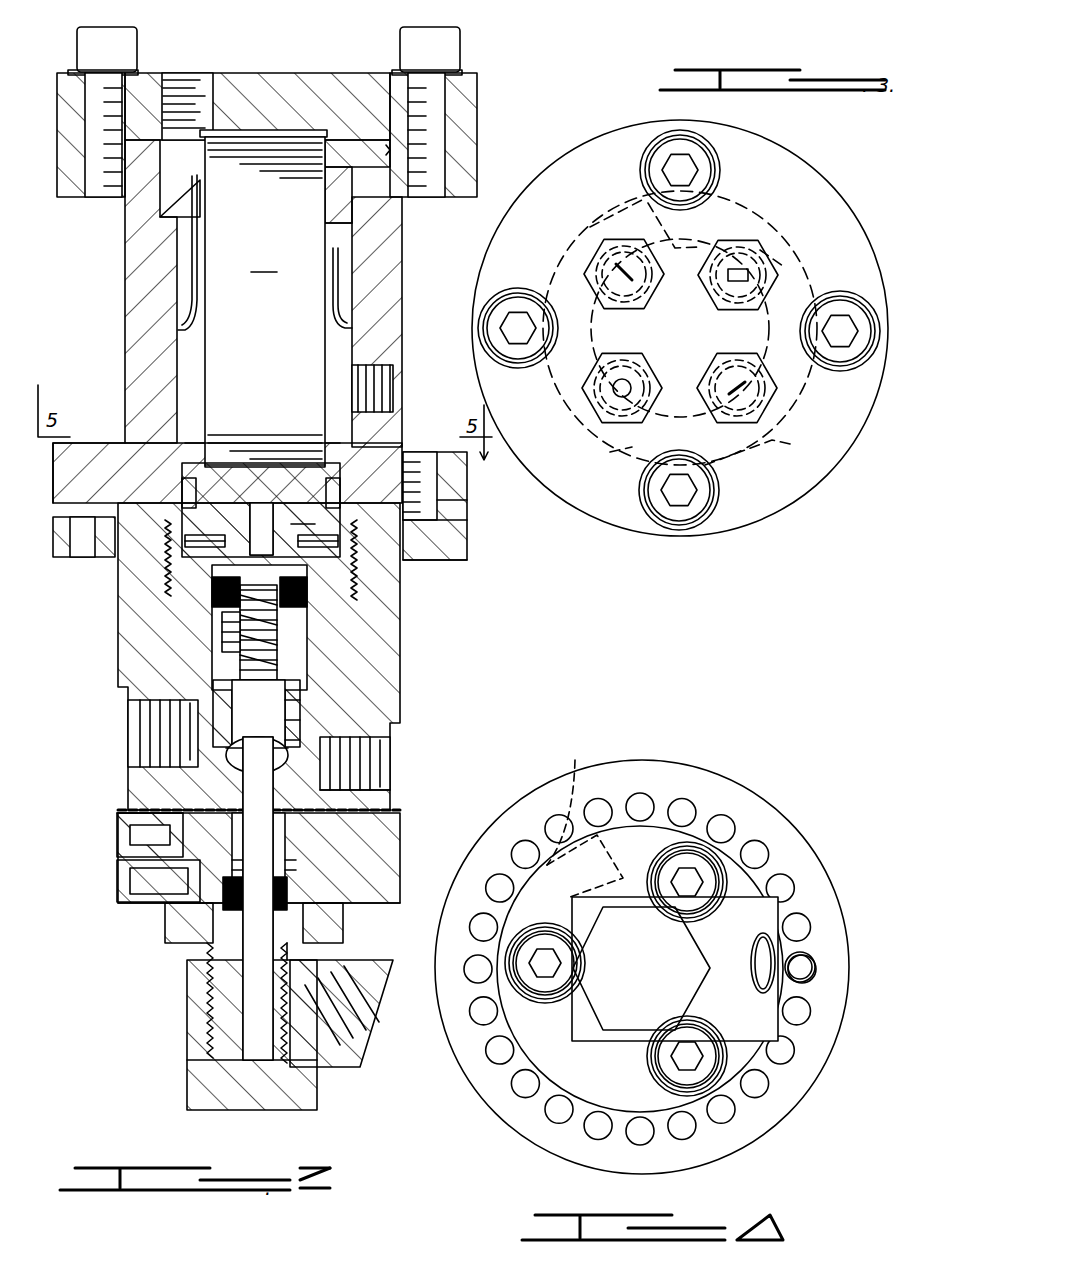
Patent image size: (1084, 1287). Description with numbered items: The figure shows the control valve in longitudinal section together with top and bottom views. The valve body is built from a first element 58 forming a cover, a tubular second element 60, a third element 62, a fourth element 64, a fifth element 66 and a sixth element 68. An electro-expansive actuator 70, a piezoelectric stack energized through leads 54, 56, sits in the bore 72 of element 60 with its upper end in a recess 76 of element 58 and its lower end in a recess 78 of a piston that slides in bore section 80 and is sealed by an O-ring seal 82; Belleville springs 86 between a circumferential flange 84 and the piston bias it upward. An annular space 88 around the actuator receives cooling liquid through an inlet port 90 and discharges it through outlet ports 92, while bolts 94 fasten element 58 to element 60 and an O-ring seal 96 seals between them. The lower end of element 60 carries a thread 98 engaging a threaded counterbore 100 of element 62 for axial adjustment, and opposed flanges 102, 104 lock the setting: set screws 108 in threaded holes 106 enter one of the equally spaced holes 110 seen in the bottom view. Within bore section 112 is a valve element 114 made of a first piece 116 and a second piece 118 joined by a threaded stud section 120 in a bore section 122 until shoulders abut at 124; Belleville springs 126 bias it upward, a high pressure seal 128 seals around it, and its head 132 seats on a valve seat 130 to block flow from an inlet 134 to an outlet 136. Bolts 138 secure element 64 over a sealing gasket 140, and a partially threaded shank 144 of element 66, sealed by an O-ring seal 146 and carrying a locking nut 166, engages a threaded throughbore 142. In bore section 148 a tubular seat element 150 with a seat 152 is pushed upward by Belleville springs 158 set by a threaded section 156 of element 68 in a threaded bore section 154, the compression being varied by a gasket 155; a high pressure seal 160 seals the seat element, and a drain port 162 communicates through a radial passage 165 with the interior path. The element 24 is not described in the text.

In FIG. 2, the plug 24 is at (261, 500).
In FIG. 2, the lead 54 is at (170, 210).
In FIG. 3, the lead 54 is at (632, 292).
In FIG. 2, the lead 56 is at (352, 265).
In FIG. 3, the lead 56 is at (725, 388).
In FIG. 2, the first element 58 is at (480, 115).
In FIG. 2, the second element 60 is at (400, 300).
In FIG. 2, the third element 62 is at (400, 660).
In FIG. 2, the fourth element 64 is at (400, 830).
In FIG. 2, the fifth element 66 is at (360, 970).
In FIG. 4, the fifth element 66 is at (785, 905).
In FIG. 2, the sixth element 68 is at (317, 1098).
In FIG. 4, the sixth element 68 is at (705, 945).
In FIG. 2, the electro-expansive actuator 70 is at (263, 255).
In FIG. 2, the bore 72 is at (178, 320).
In FIG. 2, the recess 76 is at (262, 134).
In FIG. 2, the recess 78 is at (262, 485).
In FIG. 2, the bore section 80 is at (340, 508).
In FIG. 2, the O-ring seal 82 is at (182, 492).
In FIG. 2, the circumferential flange 84 is at (165, 560).
In FIG. 2, the Belleville springs 86 is at (190, 552).
In FIG. 2, the annular space 88 is at (185, 365).
In FIG. 2, the inlet port 90 is at (393, 386).
In FIG. 2, the outlet ports 92 is at (195, 95).
In FIG. 3, the outlet ports 92 is at (798, 235).
In FIG. 2, the bolts 94 is at (128, 45).
In FIG. 3, the bolts 94 is at (695, 174).
In FIG. 2, the O-ring seal 96 is at (390, 148).
In FIG. 2, the thread 98 is at (185, 540).
In FIG. 2, the threaded counterbore 100 is at (395, 600).
In FIG. 2, the flange 102 is at (455, 492).
In FIG. 2, the flange 104 is at (467, 545).
In FIG. 4, the flange 104 is at (640, 765).
In FIG. 2, the threaded holes 106 is at (420, 452).
In FIG. 2, the set screws 108 is at (455, 510).
In FIG. 4, the set screws 108 is at (815, 960).
In FIG. 2, the holes 110 is at (430, 560).
In FIG. 4, the holes 110 is at (692, 800).
In FIG. 2, the bore section 112 is at (290, 668).
In FIG. 2, the valve element 114 is at (300, 690).
In FIG. 2, the first piece 116 is at (290, 648).
In FIG. 2, the second piece 118 is at (243, 690).
In FIG. 2, the threaded stud section 120 is at (222, 640).
In FIG. 2, the bore section 122 is at (300, 620).
In FIG. 2, the shoulders 124 is at (290, 700).
In FIG. 2, the Belleville springs 126 is at (210, 605).
In FIG. 2, the high pressure seal 128 is at (298, 638).
In FIG. 2, the valve seat 130 is at (288, 755).
In FIG. 2, the head 132 is at (150, 748).
In FIG. 2, the inlet 134 is at (160, 765).
In FIG. 4, the inlet 134 is at (584, 817).
In FIG. 2, the outlet 136 is at (370, 762).
In FIG. 2, the bolts 138 is at (118, 814).
In FIG. 4, the bolts 138 is at (698, 882).
In FIG. 2, the sealing gasket 140 is at (400, 806).
In FIG. 2, the threaded throughbore 142 is at (290, 885).
In FIG. 2, the partially threaded shank 144 is at (296, 862).
In FIG. 2, the O-ring seal 146 is at (390, 785).
In FIG. 2, the bore section 148 is at (130, 835).
In FIG. 2, the seat element 150 is at (285, 825).
In FIG. 2, the seat 152 is at (243, 750).
In FIG. 2, the threaded bore section 154 is at (210, 1040).
In FIG. 2, the gasket 155 is at (205, 1065).
In FIG. 2, the threaded section 156 is at (207, 1012).
In FIG. 2, the Belleville springs 158 is at (175, 925).
In FIG. 2, the high pressure seal 160 is at (130, 880).
In FIG. 2, the drain port 162 is at (355, 1035).
In FIG. 4, the drain port 162 is at (775, 980).
In FIG. 2, the radial passage 165 is at (290, 960).
In FIG. 2, the locking nut 166 is at (343, 925).